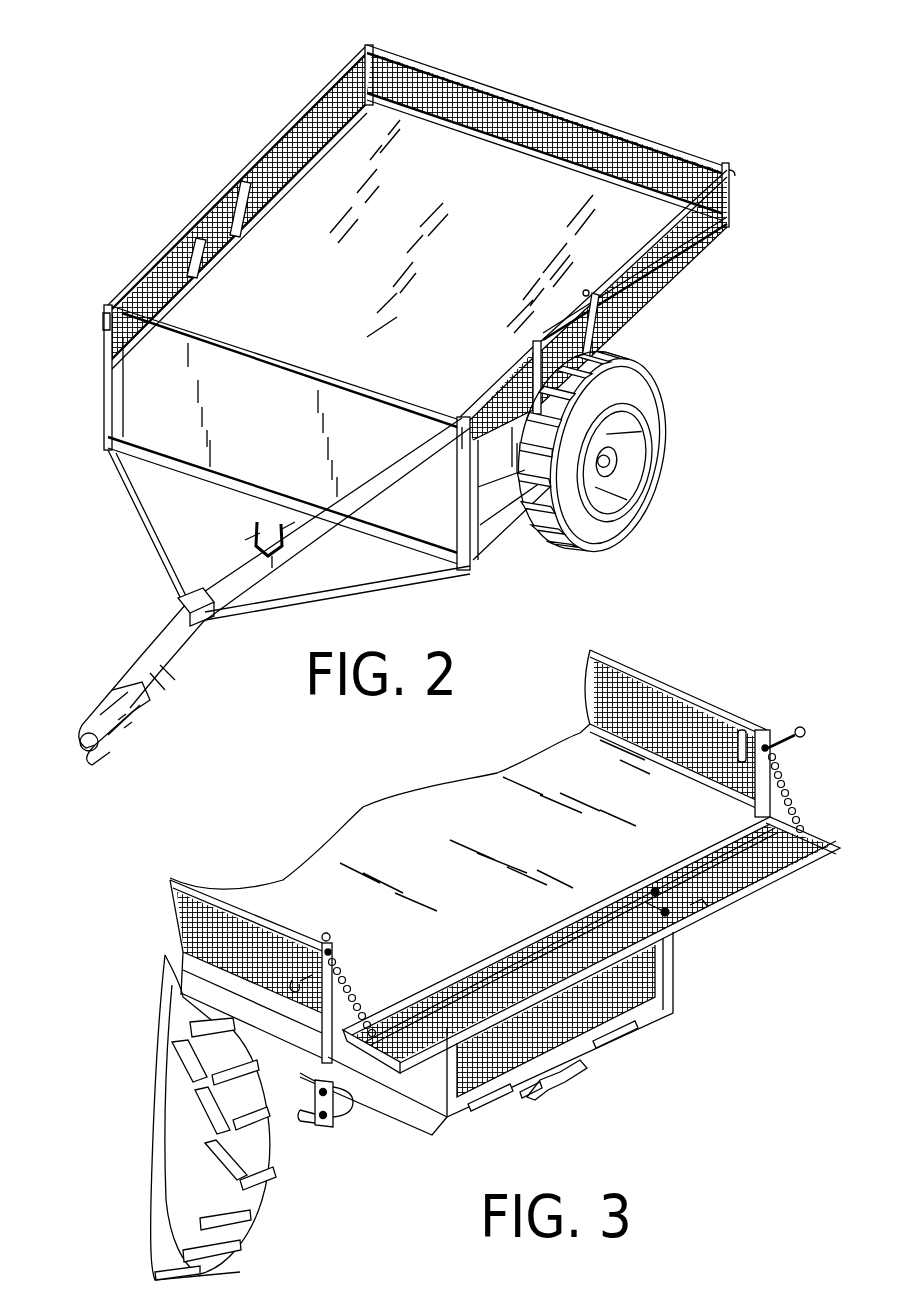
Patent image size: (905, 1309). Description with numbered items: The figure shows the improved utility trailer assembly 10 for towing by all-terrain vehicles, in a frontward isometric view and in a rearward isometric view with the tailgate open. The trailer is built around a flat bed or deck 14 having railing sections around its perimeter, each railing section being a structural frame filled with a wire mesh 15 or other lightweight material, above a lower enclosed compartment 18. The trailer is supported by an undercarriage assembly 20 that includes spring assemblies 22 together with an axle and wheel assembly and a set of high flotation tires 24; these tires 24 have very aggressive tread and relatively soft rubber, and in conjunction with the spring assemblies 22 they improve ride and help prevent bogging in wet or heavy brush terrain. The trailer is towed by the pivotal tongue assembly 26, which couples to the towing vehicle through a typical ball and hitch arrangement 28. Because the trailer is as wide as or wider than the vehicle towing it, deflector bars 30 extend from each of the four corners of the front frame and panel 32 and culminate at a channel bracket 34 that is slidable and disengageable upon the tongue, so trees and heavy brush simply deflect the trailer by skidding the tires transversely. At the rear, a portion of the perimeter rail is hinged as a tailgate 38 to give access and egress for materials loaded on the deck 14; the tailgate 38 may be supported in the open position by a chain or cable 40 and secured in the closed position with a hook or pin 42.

In FIG. 2, the utility trailer assembly 10 is at (127, 210).
In FIG. 2, the flat bed or deck 14 is at (462, 205).
In FIG. 3, the flat bed or deck 14 is at (590, 795).
In FIG. 3, the wire mesh 15 is at (583, 688).
In FIG. 2, the lower enclosed compartment 18 is at (276, 92).
In FIG. 3, the lower enclosed compartment 18 is at (762, 700).
In FIG. 2, the undercarriage assembly 20 is at (700, 426).
In FIG. 3, the spring assemblies 22 is at (297, 1120).
In FIG. 3, the high flotation tires 24 is at (247, 1220).
In FIG. 2, the pivotal tongue assembly 26 is at (217, 652).
In FIG. 2, the ball and hitch arrangement 28 is at (58, 728).
In FIG. 2, the deflector bars 30 is at (150, 516).
In FIG. 2, the front frame and panel 32 is at (319, 455).
In FIG. 2, the channel bracket 34 is at (193, 604).
In FIG. 3, the tailgate 38 is at (697, 927).
In FIG. 3, the chain or cable 40 is at (787, 803).
In FIG. 3, the hook or pin 42 is at (787, 741).